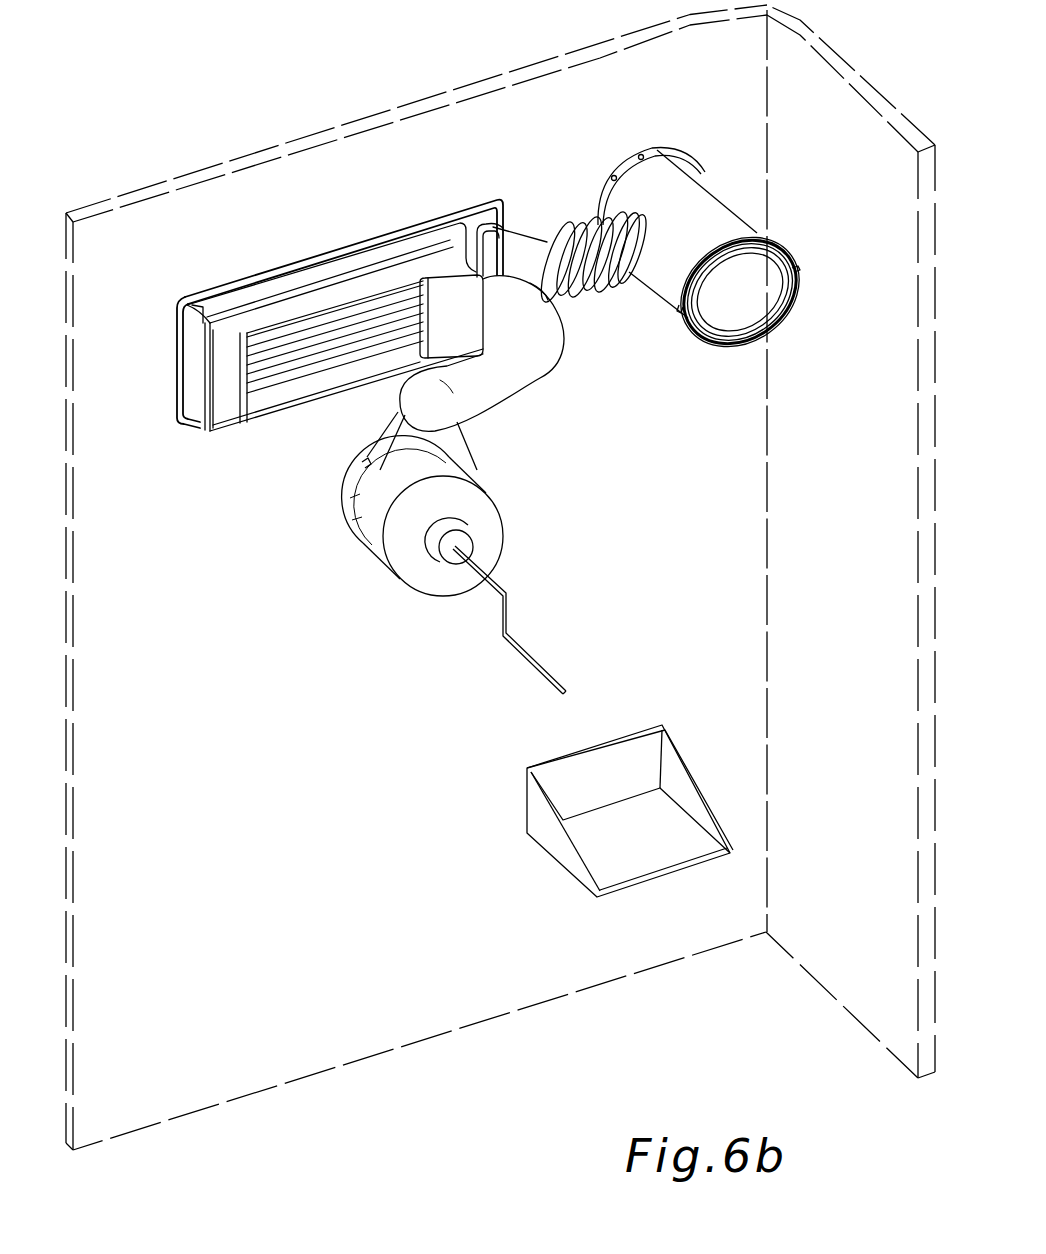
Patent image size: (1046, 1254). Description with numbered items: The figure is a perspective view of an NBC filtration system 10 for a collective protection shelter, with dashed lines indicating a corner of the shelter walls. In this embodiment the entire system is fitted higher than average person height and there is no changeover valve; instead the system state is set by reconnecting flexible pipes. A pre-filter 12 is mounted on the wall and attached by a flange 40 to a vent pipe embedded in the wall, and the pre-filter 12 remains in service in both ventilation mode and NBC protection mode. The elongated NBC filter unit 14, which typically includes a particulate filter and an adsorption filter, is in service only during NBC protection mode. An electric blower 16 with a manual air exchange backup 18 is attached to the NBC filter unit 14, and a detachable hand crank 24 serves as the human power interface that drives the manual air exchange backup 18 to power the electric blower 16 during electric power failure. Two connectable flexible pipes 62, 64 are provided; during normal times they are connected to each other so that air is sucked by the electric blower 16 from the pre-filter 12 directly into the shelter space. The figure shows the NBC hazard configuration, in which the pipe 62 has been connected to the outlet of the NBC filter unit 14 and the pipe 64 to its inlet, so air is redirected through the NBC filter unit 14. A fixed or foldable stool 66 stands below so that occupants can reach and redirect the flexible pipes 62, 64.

The NBC filtration system 10 is at (813, 186).
The pre-filter 12 is at (700, 178).
The NBC filter unit 14 is at (338, 262).
The electric blower 16 is at (370, 553).
The manual air exchange backup 18 is at (430, 553).
The hand crank 24 is at (540, 660).
The flange 40 is at (627, 163).
The flexible pipe 62 is at (560, 367).
The flexible pipe 64 is at (587, 300).
The foldable stool 66 is at (550, 857).